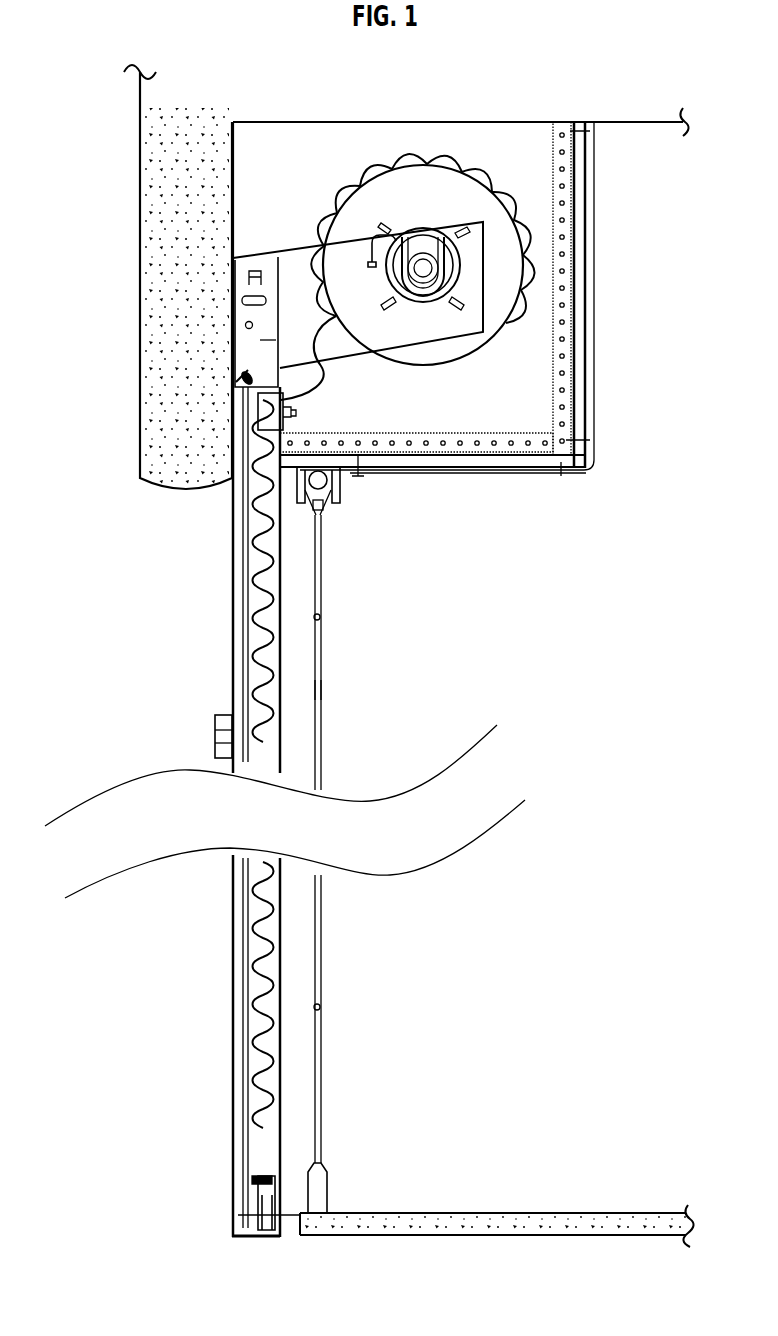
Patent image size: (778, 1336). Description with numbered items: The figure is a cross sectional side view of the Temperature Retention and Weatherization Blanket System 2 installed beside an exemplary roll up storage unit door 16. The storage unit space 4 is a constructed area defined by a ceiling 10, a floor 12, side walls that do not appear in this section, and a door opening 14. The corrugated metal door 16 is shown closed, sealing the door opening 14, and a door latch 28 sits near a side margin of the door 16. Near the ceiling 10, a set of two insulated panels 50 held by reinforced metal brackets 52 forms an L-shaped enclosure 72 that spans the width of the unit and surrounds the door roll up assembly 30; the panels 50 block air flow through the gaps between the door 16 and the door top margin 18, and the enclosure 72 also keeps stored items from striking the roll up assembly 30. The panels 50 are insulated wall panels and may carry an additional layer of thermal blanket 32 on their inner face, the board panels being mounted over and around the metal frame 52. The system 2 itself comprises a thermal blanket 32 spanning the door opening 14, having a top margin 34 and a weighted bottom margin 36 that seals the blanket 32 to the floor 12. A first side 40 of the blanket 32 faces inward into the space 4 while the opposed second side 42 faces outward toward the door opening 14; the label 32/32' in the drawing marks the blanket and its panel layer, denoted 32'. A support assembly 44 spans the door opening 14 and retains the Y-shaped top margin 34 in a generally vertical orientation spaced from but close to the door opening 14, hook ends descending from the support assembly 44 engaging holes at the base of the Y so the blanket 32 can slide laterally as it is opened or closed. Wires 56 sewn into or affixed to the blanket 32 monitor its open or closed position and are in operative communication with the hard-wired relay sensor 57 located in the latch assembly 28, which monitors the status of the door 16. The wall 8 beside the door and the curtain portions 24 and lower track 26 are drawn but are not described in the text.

The Temperature Retention and Weatherization Blanket System 2 is at (643, 668).
The storage unit space 4 is at (610, 897).
The wall 8 is at (202, 326).
The ceiling 10 is at (640, 122).
The floor 12 is at (528, 1213).
The door opening 14 is at (165, 570).
The storage unit door 16 is at (250, 653).
The door top margin 18 is at (330, 196).
The curtain 24 is at (278, 1060).
The lower guide track 26 is at (232, 1106).
The door latch 28 is at (216, 714).
The door roll up assembly 30 is at (433, 214).
The thermal blanket 32 is at (489, 354).
The tensioning member 32' is at (390, 685).
The top margin 34 is at (330, 510).
The bottom margin 36 is at (330, 1180).
The first side 40 is at (322, 758).
The second side 42 is at (308, 950).
The support assembly 44 is at (340, 480).
The insulated panels 50 is at (578, 270).
The reinforced metal brackets 52 is at (555, 148).
The wires 56 is at (320, 617).
The relay sensor 57 is at (216, 742).
The L-shaped enclosure 72 is at (638, 436).